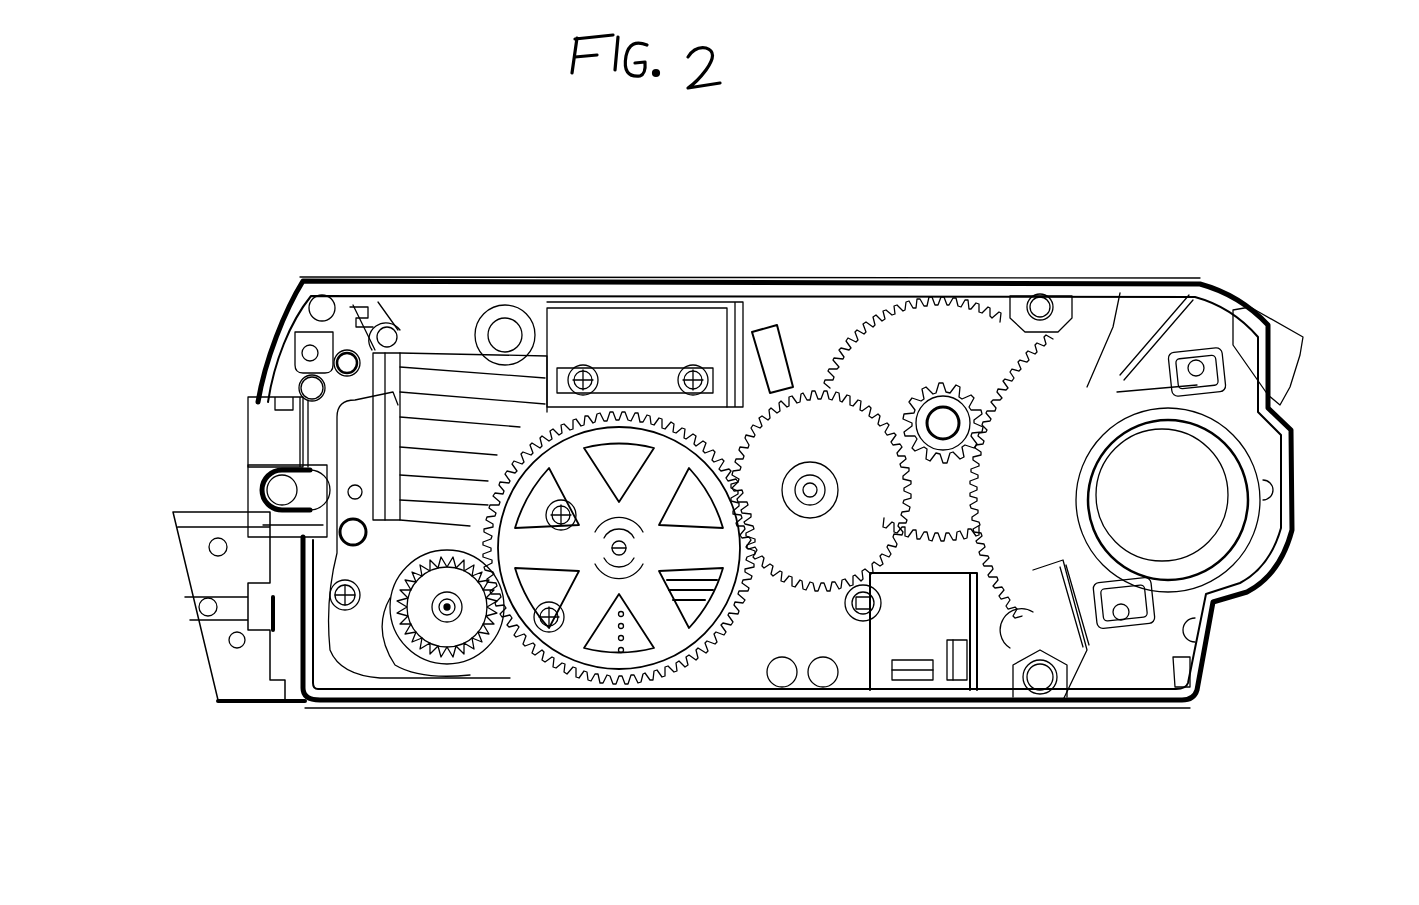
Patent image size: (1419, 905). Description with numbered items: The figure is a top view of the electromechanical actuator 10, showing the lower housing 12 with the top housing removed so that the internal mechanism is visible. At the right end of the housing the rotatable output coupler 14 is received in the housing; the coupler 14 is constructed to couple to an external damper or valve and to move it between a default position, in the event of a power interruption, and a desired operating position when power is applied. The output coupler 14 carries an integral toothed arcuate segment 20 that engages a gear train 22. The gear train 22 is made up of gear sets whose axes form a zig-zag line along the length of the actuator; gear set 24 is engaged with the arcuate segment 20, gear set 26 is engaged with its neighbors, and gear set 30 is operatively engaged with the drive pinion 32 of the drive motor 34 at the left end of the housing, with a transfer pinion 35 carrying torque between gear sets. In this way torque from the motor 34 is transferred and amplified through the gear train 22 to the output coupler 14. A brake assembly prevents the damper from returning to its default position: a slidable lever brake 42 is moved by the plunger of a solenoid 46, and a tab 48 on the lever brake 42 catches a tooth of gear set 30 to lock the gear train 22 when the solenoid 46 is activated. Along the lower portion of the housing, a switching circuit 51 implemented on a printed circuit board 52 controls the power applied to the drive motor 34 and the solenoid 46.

The electromechanical actuator 10 is at (1025, 234).
The lower housing 12 is at (762, 281).
The output coupler 14 is at (1223, 443).
The arcuate segment 20 is at (1087, 387).
The gear train 22 is at (823, 337).
The gear set 24 is at (942, 348).
The gear set 26 is at (822, 447).
The gear set 30 is at (667, 657).
The drive pinion 32 is at (457, 633).
The drive motor 34 is at (373, 623).
The transfer pinion 35 is at (940, 388).
The lever brake 42 is at (647, 337).
The solenoid 46 is at (737, 302).
The tab 48 is at (560, 412).
The switching circuit 51 is at (864, 664).
The printed circuit board 52 is at (760, 647).